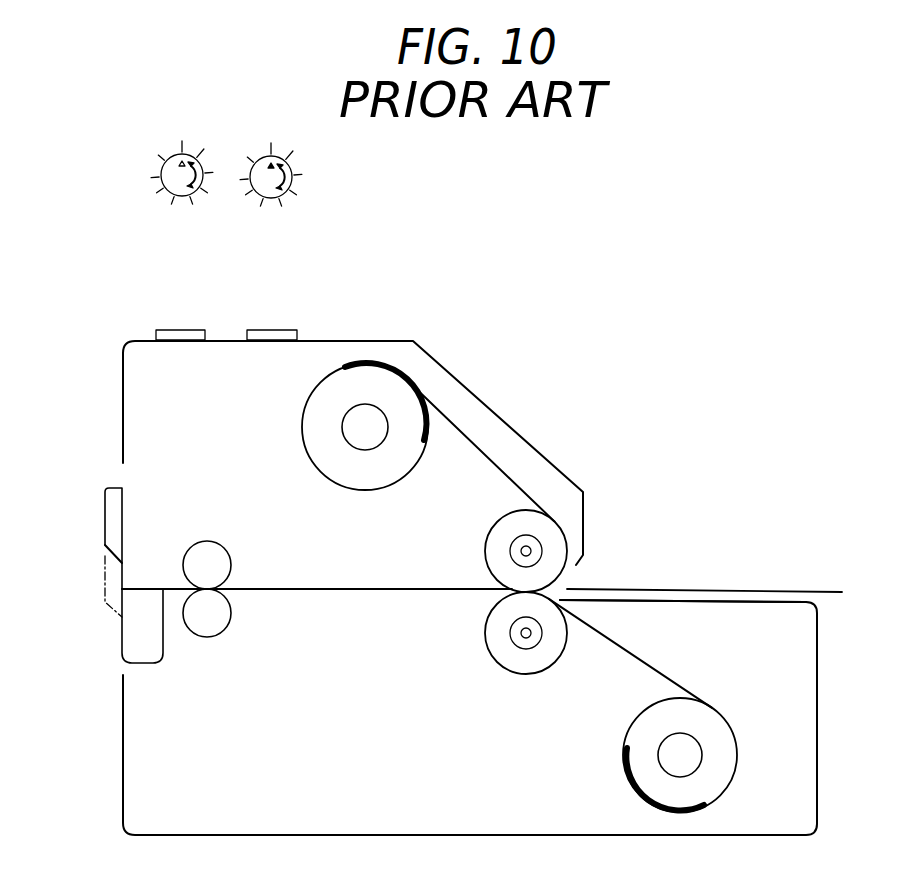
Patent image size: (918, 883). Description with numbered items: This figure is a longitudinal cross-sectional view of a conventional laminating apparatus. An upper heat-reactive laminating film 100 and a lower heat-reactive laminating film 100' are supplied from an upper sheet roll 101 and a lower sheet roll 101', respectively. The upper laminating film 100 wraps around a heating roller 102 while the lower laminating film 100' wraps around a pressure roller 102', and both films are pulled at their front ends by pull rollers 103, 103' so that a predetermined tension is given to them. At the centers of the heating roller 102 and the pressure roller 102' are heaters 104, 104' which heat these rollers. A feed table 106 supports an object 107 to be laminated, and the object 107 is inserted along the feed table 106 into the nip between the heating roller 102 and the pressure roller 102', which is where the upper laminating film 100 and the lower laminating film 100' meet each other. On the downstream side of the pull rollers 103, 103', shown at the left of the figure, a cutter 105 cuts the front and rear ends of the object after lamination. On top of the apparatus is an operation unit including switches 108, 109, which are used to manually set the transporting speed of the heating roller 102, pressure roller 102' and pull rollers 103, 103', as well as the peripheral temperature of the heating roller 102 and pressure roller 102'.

The upper heat-reactive laminating film 100 is at (482, 445).
The lower heat-reactive laminating film 100' is at (630, 653).
The upper sheet roll 101 is at (365, 383).
The lower sheet roll 101' is at (641, 755).
The heating roller 102 is at (563, 551).
The pressure roller 102' is at (525, 663).
The pull roller 103 is at (215, 522).
The pull roller 103' is at (213, 650).
The heater 104 is at (482, 556).
The heater 104' is at (483, 641).
The cutter 105 is at (110, 525).
The feed table 106 is at (707, 600).
The object to be laminated 107 is at (760, 590).
The switch 108 is at (290, 330).
The switch 109 is at (172, 330).